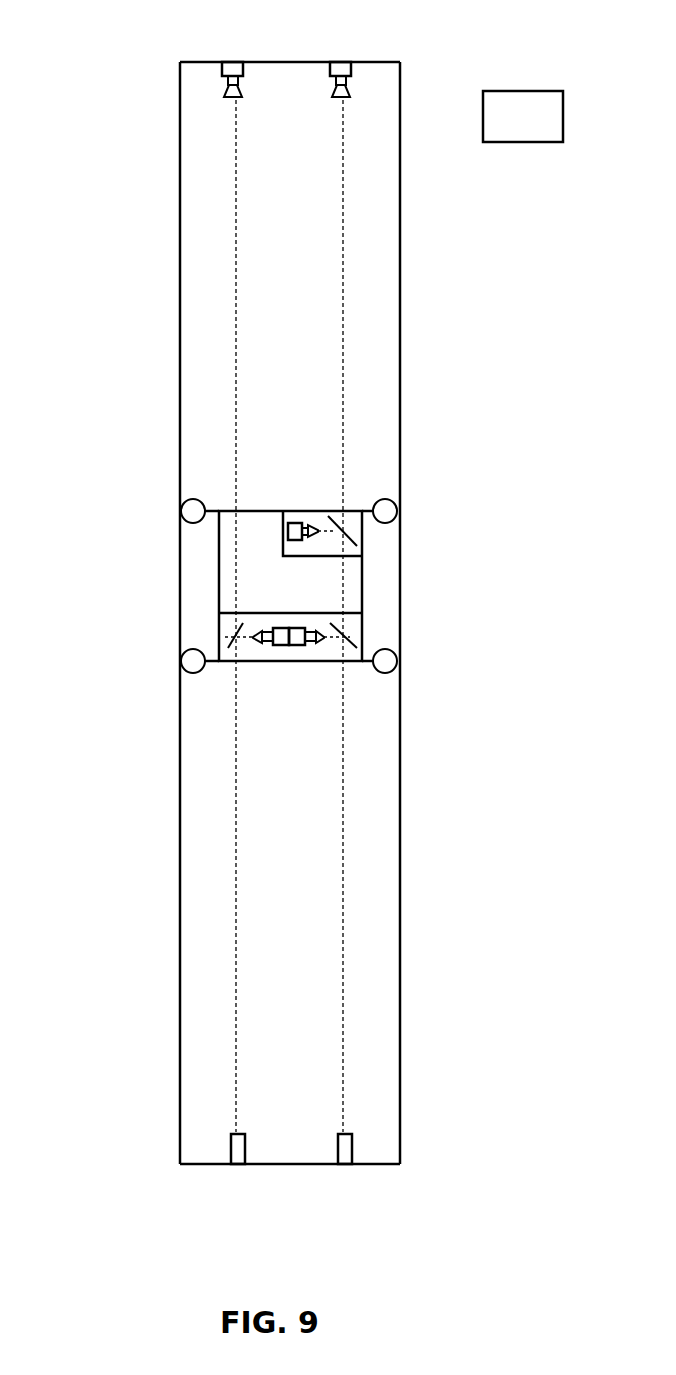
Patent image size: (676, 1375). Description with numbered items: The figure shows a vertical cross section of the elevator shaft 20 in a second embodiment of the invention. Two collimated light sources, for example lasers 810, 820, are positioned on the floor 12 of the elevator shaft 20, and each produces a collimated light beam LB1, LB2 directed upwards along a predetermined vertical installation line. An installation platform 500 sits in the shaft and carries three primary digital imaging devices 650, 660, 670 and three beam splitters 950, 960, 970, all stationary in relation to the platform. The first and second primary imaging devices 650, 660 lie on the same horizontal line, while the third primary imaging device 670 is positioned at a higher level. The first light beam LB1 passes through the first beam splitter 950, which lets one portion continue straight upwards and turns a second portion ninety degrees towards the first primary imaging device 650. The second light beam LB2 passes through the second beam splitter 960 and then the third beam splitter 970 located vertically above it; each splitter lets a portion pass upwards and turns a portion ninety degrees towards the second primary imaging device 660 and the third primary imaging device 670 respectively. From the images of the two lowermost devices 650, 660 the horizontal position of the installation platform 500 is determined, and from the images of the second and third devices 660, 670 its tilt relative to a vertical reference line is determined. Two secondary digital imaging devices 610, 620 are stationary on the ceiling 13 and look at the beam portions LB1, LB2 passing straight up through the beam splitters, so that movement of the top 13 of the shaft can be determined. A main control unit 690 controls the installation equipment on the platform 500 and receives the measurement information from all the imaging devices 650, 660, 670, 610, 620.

The floor 12 is at (372, 1166).
The ceiling 13 is at (375, 60).
The elevator shaft 20 is at (303, 210).
The installation platform 500 is at (210, 587).
The first secondary digital imaging device 610 is at (233, 66).
The second secondary digital imaging device 620 is at (341, 66).
The first primary digital imaging device 650 is at (283, 643).
The second primary digital imaging device 660 is at (297, 643).
The third primary digital imaging device 670 is at (295, 522).
The main control unit 690 is at (543, 130).
The first light source 810 is at (238, 1148).
The second light source 820 is at (345, 1148).
The first beam splitter 950 is at (228, 646).
The second beam splitter 960 is at (352, 645).
The third beam splitter 970 is at (350, 538).
The first light beam LB1 is at (237, 978).
The second light beam LB2 is at (344, 978).